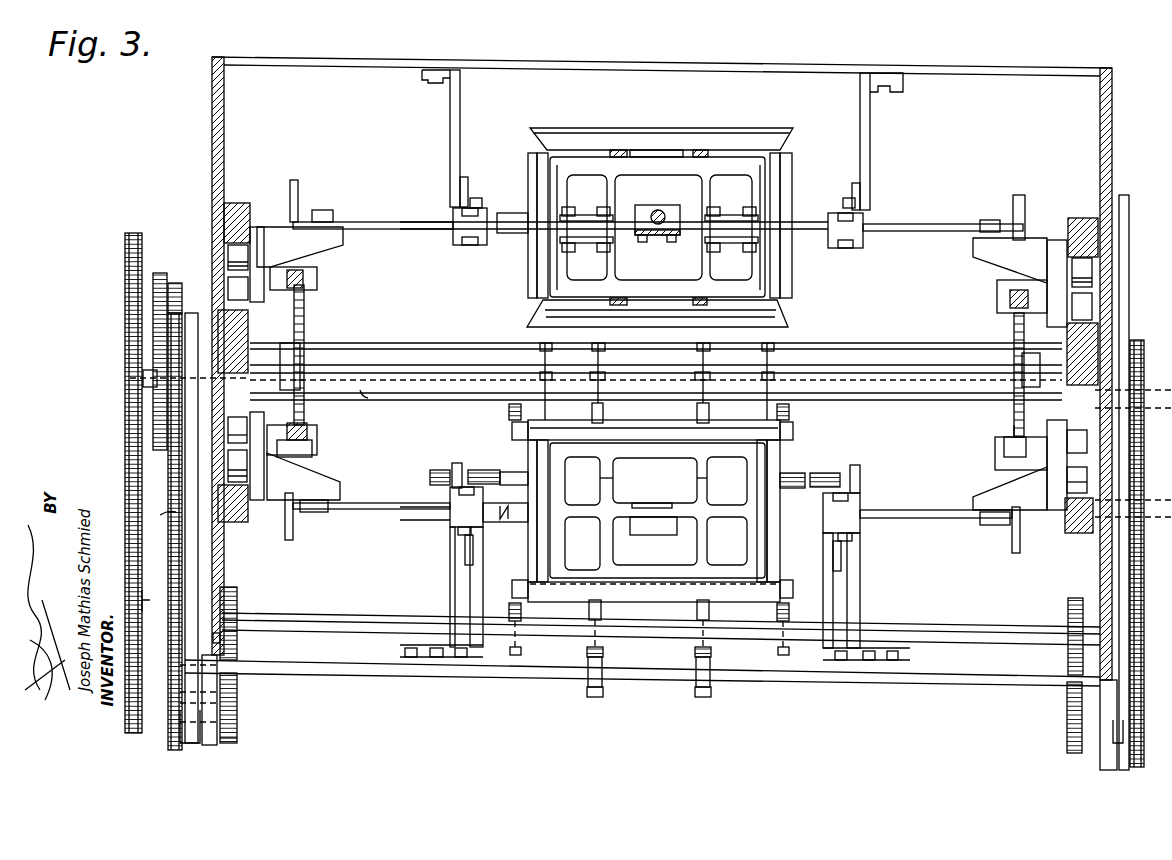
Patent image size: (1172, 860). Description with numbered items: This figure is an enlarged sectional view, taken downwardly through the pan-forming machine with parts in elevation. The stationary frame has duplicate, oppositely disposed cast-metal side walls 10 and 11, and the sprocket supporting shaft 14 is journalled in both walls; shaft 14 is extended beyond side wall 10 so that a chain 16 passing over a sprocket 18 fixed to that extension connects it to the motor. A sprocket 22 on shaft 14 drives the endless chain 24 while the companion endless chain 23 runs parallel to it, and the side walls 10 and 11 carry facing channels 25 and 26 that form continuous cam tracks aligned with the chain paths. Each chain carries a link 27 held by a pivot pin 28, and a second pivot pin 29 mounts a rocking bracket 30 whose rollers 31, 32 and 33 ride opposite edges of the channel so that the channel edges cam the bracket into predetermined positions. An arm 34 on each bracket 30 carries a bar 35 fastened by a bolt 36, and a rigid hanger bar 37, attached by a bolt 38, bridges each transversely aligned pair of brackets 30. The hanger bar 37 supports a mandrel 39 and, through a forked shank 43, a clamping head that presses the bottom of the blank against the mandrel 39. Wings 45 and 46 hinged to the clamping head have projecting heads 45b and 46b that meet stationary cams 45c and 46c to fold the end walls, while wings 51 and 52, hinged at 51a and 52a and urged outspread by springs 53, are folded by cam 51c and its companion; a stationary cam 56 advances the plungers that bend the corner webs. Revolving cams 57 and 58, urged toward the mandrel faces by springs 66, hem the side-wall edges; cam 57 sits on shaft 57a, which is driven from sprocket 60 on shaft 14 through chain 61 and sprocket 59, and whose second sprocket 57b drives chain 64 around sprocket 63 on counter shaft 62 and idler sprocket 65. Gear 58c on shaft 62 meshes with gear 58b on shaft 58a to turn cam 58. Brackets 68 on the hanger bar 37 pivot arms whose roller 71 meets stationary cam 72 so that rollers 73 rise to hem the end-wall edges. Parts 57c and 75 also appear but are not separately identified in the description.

The side wall 10 is at (224, 562).
The side wall 11 is at (1100, 155).
The sprocket supporting shaft 14 is at (445, 348).
The chain 16 is at (152, 603).
The sprocket 18 is at (128, 333).
The sprocket 22 is at (306, 338).
The endless chain 23 is at (320, 453).
The endless chain 24 is at (1012, 432).
The channel 25 is at (237, 205).
The channel 26 is at (1066, 517).
The link 27 is at (318, 290).
The pivot pin 28 is at (300, 425).
The second pivot pin 29 is at (305, 285).
The bracket 30 is at (259, 226).
The roller 31 is at (248, 470).
The roller 32 is at (246, 256).
The third roller 33 is at (246, 285).
The arm 34 is at (345, 243).
The bar 35 is at (298, 192).
The bolt 36 is at (325, 513).
The hanger bar 37 is at (903, 225).
The bolt 38 is at (325, 210).
The mandrel 39 is at (785, 150).
The shank 43 is at (668, 205).
The wing 45 is at (528, 282).
The projecting head 45b is at (590, 477).
The stationary cam 45c is at (490, 470).
The wing 46 is at (792, 286).
The projecting head 46b is at (719, 477).
The stationary cam 46c is at (800, 476).
The wing 51 is at (650, 318).
The hinge 51a is at (700, 310).
The cam 51c is at (605, 413).
The wing 52 is at (680, 135).
The hinge 52a is at (650, 150).
The springs 53 is at (618, 150).
The stationary cam 56 is at (550, 372).
The revolving cam 57 is at (574, 428).
The shaft 57a is at (378, 404).
The second sprocket 57b is at (1140, 342).
The lower carriage bottom bar 57c is at (603, 610).
The cam 58 is at (568, 582).
The shaft 58a is at (290, 616).
The gear 58b is at (240, 650).
The gear 58c is at (240, 732).
The sprocket 59 is at (132, 380).
The sprocket 60 is at (176, 283).
The chain 61 is at (160, 273).
The counter shaft 62 is at (240, 697).
The sprocket 63 is at (200, 740).
The chain 64 is at (176, 560).
The idler sprocket 65 is at (1115, 540).
The spring 66 is at (509, 411).
The bracket 68 is at (456, 240).
The roller 71 is at (478, 200).
The stationary cam 72 is at (466, 550).
The rollers 73 is at (540, 200).
The hanger bar 75 is at (464, 185).